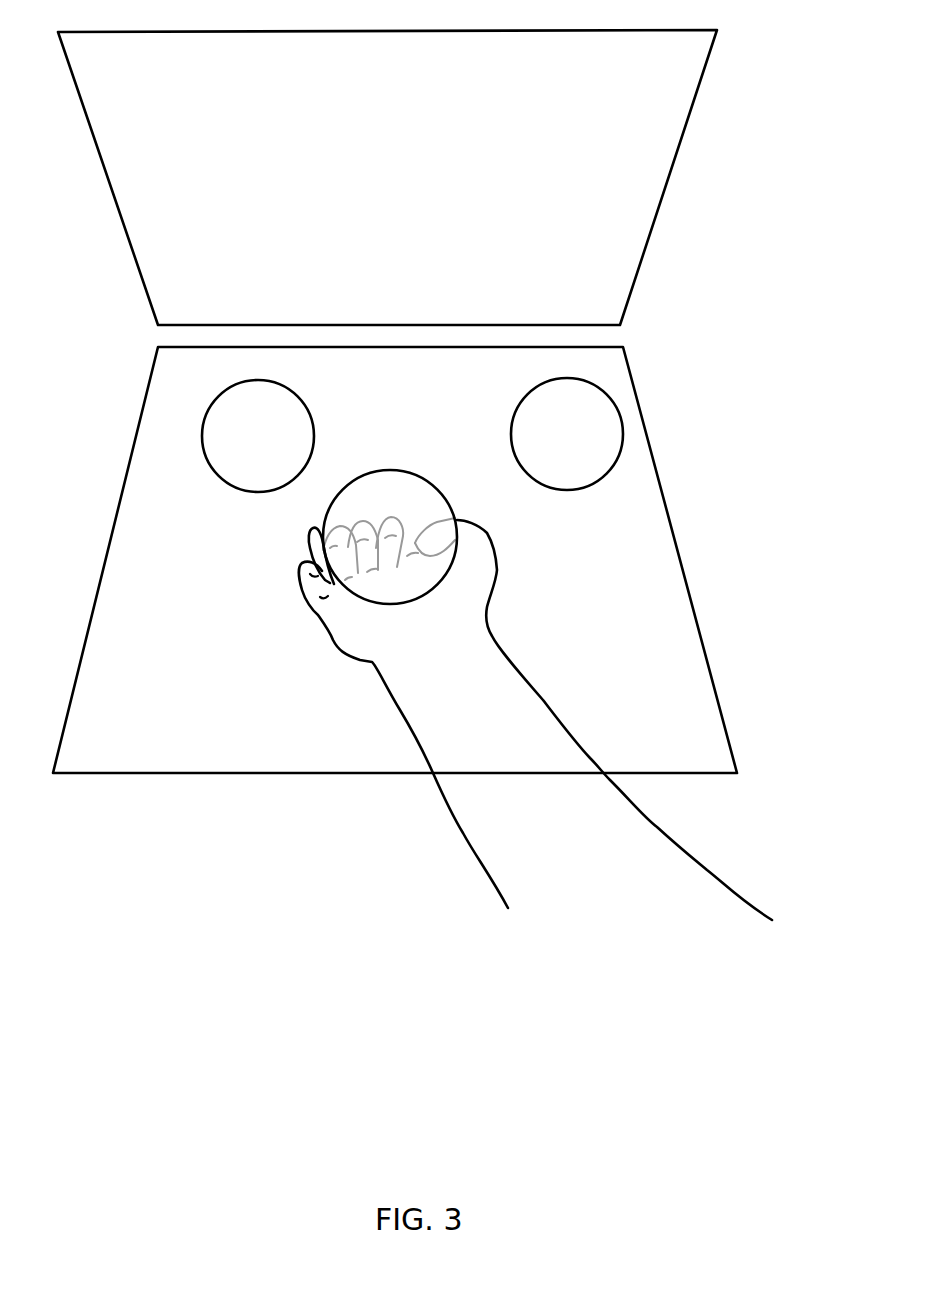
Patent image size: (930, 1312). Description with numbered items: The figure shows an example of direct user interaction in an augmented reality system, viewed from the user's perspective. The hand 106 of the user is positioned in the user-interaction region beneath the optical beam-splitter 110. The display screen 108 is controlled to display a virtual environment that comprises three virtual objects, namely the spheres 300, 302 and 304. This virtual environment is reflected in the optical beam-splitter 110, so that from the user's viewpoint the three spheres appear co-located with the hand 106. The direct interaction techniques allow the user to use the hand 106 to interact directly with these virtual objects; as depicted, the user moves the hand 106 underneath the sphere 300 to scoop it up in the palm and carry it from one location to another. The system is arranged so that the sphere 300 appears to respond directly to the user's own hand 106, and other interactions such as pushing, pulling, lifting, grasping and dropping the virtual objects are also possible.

The display screen 108 is at (683, 130).
The optical beam-splitter 110 is at (667, 513).
The sphere 302 is at (228, 483).
The sphere 304 is at (623, 420).
The sphere 300 is at (403, 470).
The hand 106 is at (495, 570).